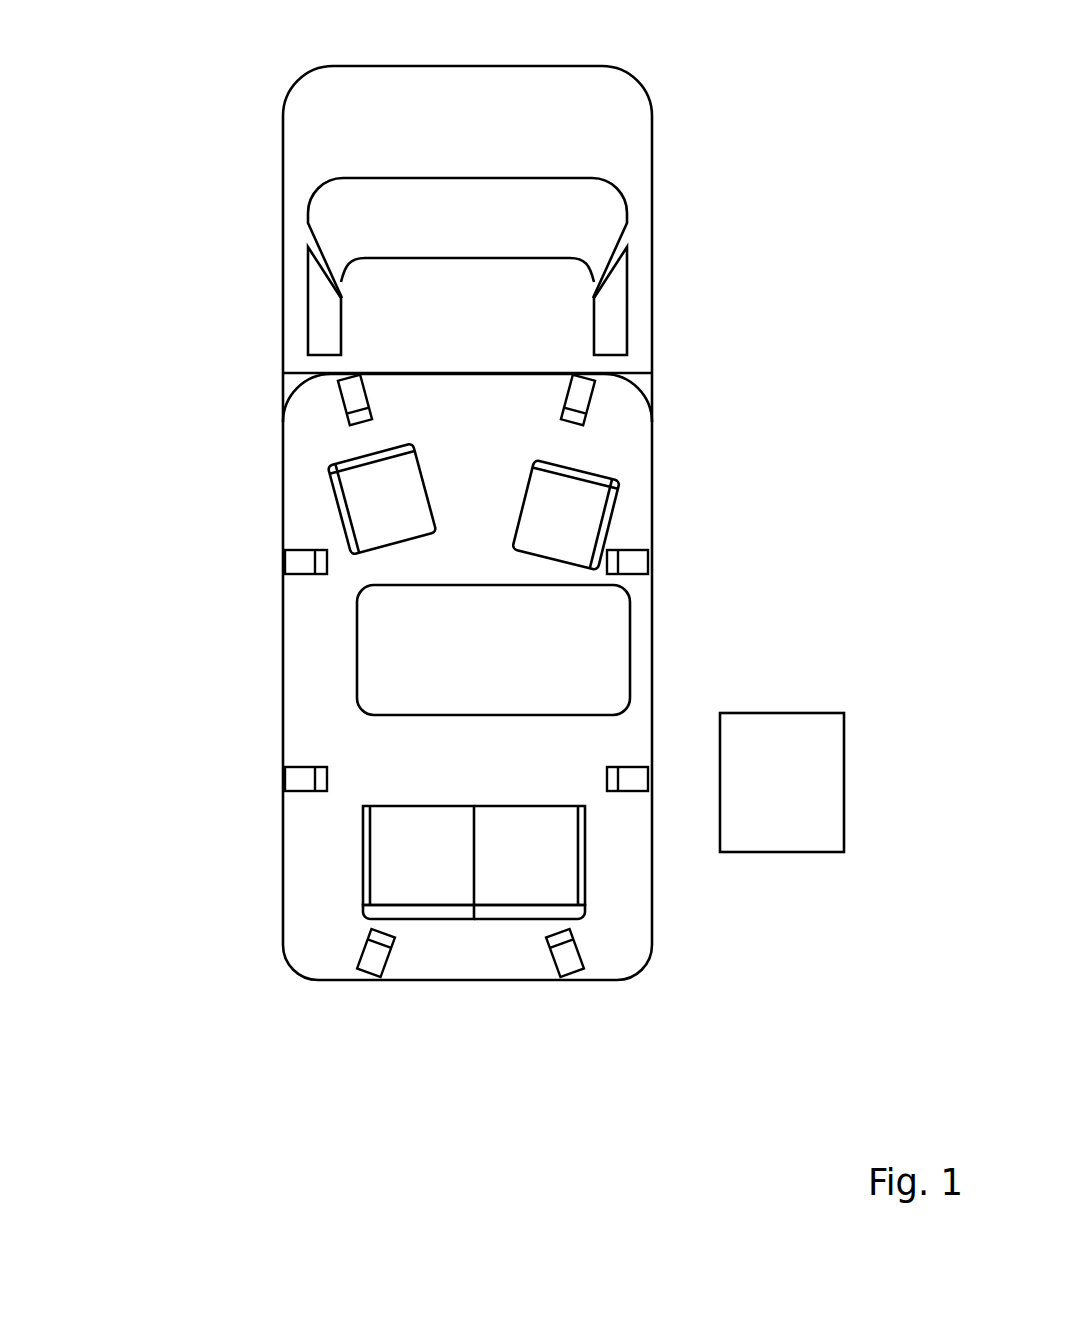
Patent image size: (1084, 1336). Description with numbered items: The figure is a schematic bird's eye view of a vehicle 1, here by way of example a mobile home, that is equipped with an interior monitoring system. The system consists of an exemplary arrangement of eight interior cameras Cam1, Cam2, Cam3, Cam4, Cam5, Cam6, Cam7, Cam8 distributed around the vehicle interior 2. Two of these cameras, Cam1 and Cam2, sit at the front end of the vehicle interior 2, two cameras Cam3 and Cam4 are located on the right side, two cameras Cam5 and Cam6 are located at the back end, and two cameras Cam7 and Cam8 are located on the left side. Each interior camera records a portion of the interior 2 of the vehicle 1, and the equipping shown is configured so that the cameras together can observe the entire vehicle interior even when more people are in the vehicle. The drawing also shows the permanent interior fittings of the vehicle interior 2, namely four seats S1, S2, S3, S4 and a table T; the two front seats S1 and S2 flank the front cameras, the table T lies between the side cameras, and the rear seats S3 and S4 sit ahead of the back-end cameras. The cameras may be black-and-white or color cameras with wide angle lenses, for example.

The vehicle 1 is at (210, 124).
The vehicle interior 2 is at (327, 375).
The interior camera Cam1 is at (355, 399).
The interior camera Cam2 is at (587, 396).
The interior camera Cam3 is at (638, 562).
The interior camera Cam4 is at (630, 771).
The interior camera Cam5 is at (570, 965).
The interior camera Cam6 is at (373, 967).
The interior camera Cam7 is at (293, 780).
The interior camera Cam8 is at (293, 565).
The seat S1 is at (358, 505).
The seat S2 is at (592, 517).
The seat S3 is at (412, 890).
The seat S4 is at (528, 888).
The table T is at (367, 652).